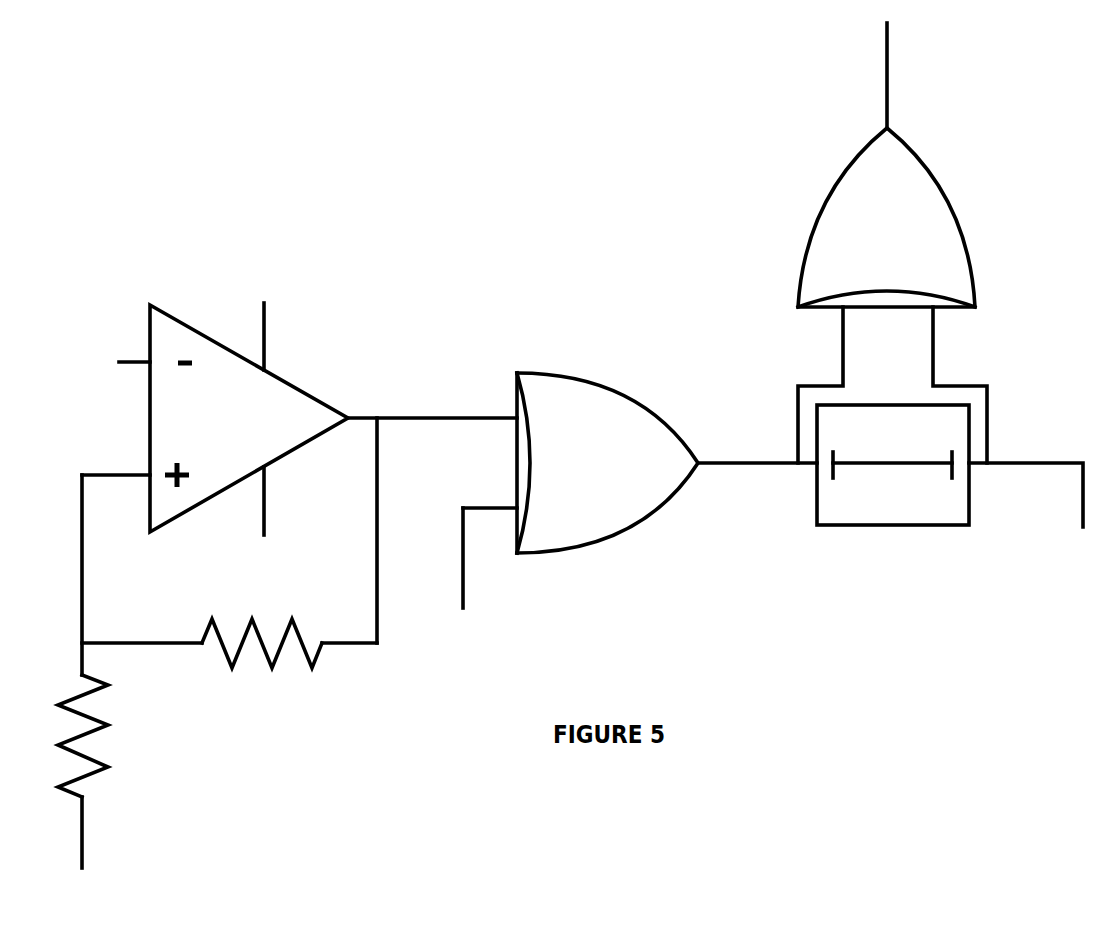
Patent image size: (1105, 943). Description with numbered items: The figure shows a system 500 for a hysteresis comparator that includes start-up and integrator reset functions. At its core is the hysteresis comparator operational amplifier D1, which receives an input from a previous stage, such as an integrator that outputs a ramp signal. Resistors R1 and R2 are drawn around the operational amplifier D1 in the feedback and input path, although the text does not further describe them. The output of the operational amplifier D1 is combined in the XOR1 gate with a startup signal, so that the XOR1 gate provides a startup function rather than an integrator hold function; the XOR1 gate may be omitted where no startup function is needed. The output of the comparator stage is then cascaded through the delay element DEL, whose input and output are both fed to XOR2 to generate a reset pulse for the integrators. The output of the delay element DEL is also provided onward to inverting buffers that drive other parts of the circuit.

The system 500 is at (570, 445).
The hysteresis comparator operational amplifier D1 is at (215, 419).
The resistor R1 is at (106, 736).
The feedback resistor R2 is at (262, 664).
The XOR1 gate XOR1 is at (607, 463).
The element XOR2 is at (886, 217).
The delay element DEL is at (893, 465).